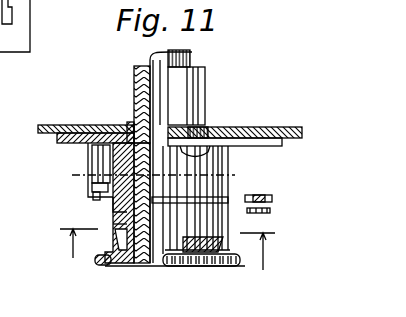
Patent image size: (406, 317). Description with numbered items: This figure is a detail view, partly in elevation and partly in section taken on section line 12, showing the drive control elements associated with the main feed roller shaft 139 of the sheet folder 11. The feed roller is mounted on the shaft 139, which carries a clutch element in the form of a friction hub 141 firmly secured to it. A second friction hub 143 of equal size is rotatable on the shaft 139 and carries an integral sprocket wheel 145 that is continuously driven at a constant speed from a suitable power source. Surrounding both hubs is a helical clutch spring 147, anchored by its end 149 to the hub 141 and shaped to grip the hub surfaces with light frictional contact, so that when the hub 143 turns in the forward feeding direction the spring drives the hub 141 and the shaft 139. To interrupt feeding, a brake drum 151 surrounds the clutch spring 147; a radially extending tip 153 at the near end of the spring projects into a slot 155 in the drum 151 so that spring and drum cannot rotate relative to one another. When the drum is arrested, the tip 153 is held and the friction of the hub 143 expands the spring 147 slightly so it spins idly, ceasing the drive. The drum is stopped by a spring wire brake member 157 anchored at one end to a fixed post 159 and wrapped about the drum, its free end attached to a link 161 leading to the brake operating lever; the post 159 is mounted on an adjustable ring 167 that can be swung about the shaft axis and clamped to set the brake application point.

The sheet folder 11 is at (0, 87).
The section line 12 is at (167, 260).
The shaft 139 is at (191, 59).
The friction hub 141 is at (128, 127).
The friction hub 143 is at (132, 266).
The sprocket wheel 145 is at (100, 266).
The helical clutch spring 147 is at (112, 210).
The spring end 149 is at (92, 160).
The brake drum 151 is at (222, 170).
The radially extending tip 153 is at (112, 224).
The slot 155 is at (117, 233).
The spring wire brake member 157 is at (230, 200).
The fixed post 159 is at (92, 173).
The link 161 is at (268, 198).
The adjustable ring 167 is at (57, 139).